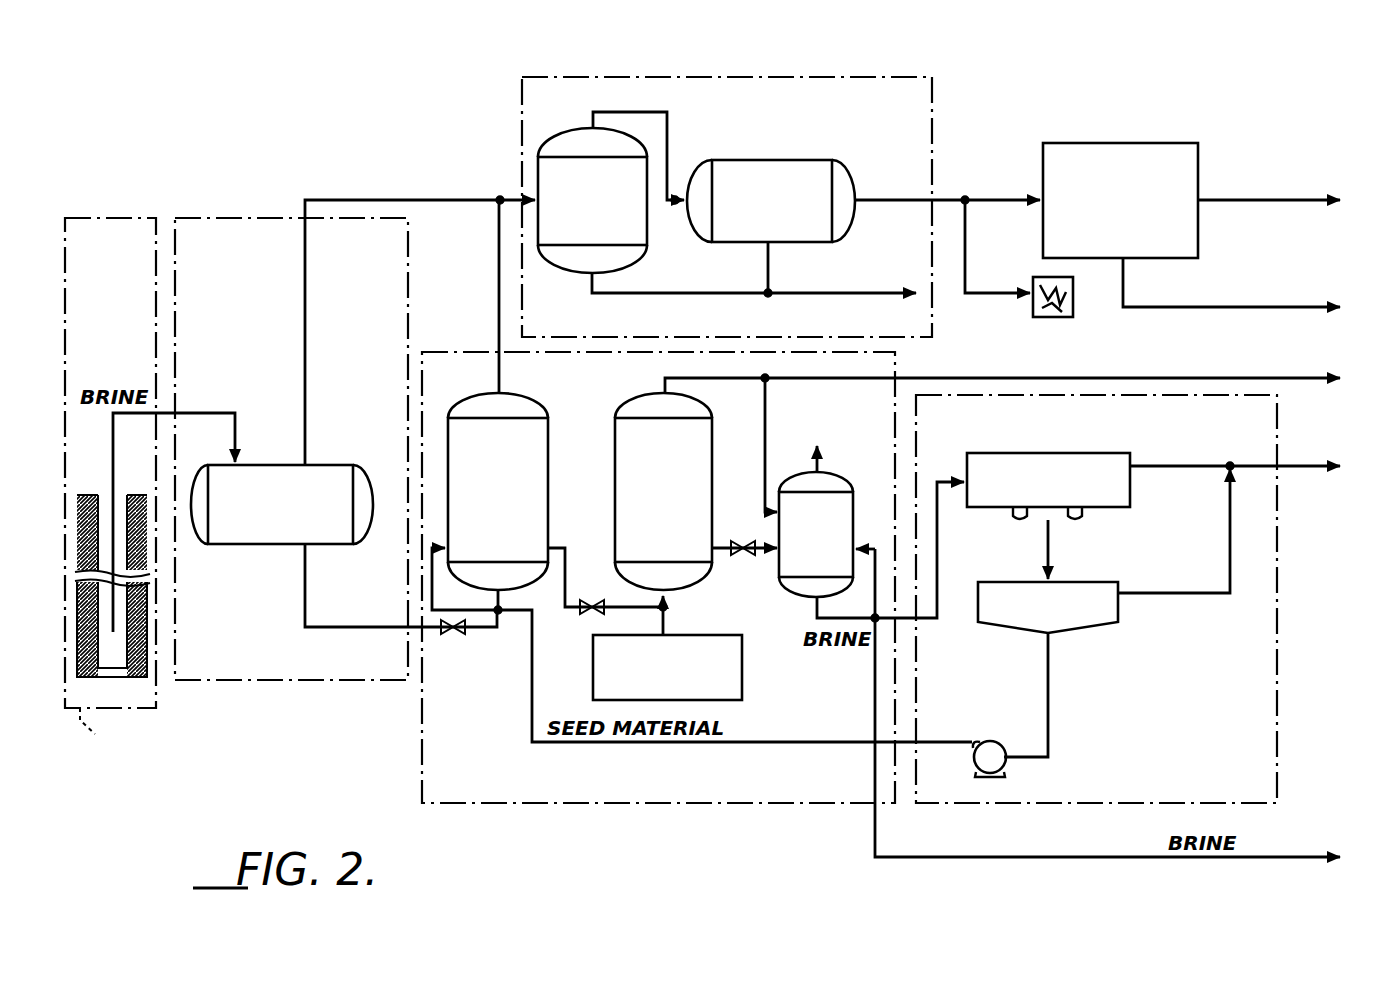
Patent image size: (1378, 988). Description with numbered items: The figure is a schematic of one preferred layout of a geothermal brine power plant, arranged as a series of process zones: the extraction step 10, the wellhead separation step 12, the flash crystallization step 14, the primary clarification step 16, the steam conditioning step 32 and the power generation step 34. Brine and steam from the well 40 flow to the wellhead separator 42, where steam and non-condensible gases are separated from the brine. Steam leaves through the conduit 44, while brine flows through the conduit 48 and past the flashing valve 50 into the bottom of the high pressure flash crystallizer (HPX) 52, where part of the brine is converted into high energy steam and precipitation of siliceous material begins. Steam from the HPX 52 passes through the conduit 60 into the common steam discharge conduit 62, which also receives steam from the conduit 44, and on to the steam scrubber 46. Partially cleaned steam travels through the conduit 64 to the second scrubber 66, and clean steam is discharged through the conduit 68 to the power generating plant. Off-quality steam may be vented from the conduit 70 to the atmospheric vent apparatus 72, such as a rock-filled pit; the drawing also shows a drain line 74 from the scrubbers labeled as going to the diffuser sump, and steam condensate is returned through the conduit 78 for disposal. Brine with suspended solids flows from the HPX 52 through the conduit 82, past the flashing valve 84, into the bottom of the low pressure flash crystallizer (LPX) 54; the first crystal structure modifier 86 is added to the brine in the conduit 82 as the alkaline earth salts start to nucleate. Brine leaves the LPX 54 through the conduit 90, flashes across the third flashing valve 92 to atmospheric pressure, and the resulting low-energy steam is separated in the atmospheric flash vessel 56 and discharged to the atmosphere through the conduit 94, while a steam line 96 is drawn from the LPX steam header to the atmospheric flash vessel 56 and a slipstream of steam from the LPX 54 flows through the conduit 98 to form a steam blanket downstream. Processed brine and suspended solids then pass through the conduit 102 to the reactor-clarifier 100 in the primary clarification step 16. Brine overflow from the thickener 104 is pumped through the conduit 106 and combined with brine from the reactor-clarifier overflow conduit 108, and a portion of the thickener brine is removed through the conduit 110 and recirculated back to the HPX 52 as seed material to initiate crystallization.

The extraction step 10 is at (120, 218).
The wellhead separation step 12 is at (245, 218).
The flash crystallization step 14 is at (420, 755).
The primary clarification step 16 is at (1075, 803).
The steam conditioning step 32 is at (522, 138).
The power generation step 34 is at (1118, 143).
The well 40 is at (128, 497).
The wellhead separator 42 is at (278, 465).
The conduit 44 is at (305, 395).
The steam scrubber 46 is at (568, 112).
The conduit 48 is at (305, 582).
The flashing valve 50 is at (450, 635).
The high pressure flash crystallizer (HPX) 52 is at (472, 402).
The low pressure flash crystallizer (LPX) 54 is at (630, 402).
The atmospheric flash vessel 56 is at (842, 478).
The conduit 60 is at (499, 285).
The common steam discharge conduit 62 is at (440, 200).
The conduit 64 is at (667, 136).
The second scrubber 66 is at (762, 160).
The conduit 68 is at (878, 200).
The conduit 70 is at (1005, 272).
The atmospheric vent apparatus 72 is at (1050, 320).
The drain line to diffuser sump 74 is at (805, 300).
The conduit 78 is at (1148, 307).
The conduit 82 is at (565, 545).
The flashing valve 84 is at (596, 600).
The first crystal structure modifier 86 is at (700, 635).
The conduit 90 is at (750, 540).
The third flashing valve 92 is at (740, 556).
The conduit 94 is at (826, 466).
The steam line to atmospheric flash tank 96 is at (767, 415).
The conduit 98 is at (1002, 378).
The reactor-clarifier 100 is at (998, 453).
The conduit 102 is at (938, 545).
The thickener 104 is at (1016, 582).
The conduit 106 is at (1165, 593).
The reactor-clarifier overflow conduit 108 is at (1160, 466).
The conduit 110 is at (1048, 670).